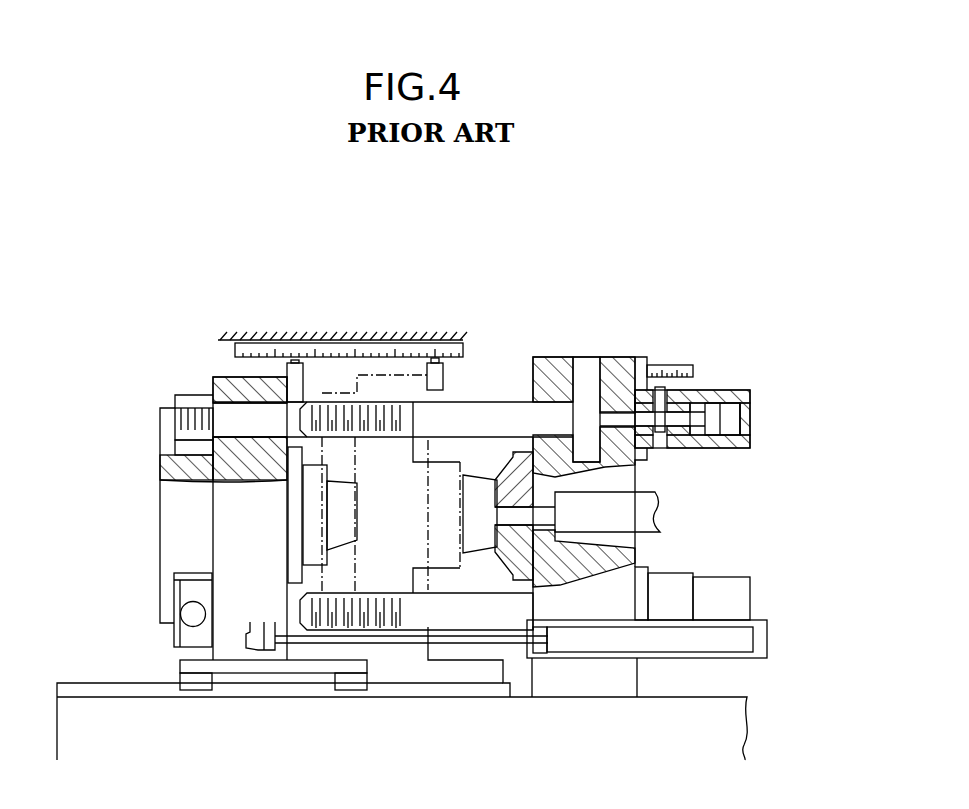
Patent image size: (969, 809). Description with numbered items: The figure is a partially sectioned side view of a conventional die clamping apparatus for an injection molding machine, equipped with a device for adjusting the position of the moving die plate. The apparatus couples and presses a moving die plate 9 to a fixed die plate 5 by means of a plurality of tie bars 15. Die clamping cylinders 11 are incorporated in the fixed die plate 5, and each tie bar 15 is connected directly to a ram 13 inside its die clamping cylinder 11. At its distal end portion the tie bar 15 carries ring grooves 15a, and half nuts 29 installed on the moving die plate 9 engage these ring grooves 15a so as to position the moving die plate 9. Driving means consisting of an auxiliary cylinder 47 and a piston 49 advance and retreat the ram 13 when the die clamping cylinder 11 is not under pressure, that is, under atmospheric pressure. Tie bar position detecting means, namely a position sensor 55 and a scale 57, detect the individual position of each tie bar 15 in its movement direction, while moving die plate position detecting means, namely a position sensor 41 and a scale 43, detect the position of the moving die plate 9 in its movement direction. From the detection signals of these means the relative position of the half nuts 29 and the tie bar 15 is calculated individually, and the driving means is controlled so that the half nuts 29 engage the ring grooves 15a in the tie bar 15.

The fixed die plate 5 is at (637, 340).
The moving die plate 9 is at (216, 376).
The die clamping cylinder 11 is at (611, 388).
The ram 13 is at (583, 388).
The tie bar 15 is at (493, 412).
The ring grooves 15a is at (398, 402).
The half nuts 29 is at (187, 443).
The position sensor 41 is at (304, 362).
The scale 43 is at (325, 350).
The auxiliary cylinder 47 is at (752, 413).
The piston 49 is at (713, 430).
The position sensor 55 is at (668, 398).
The scale 57 is at (667, 364).